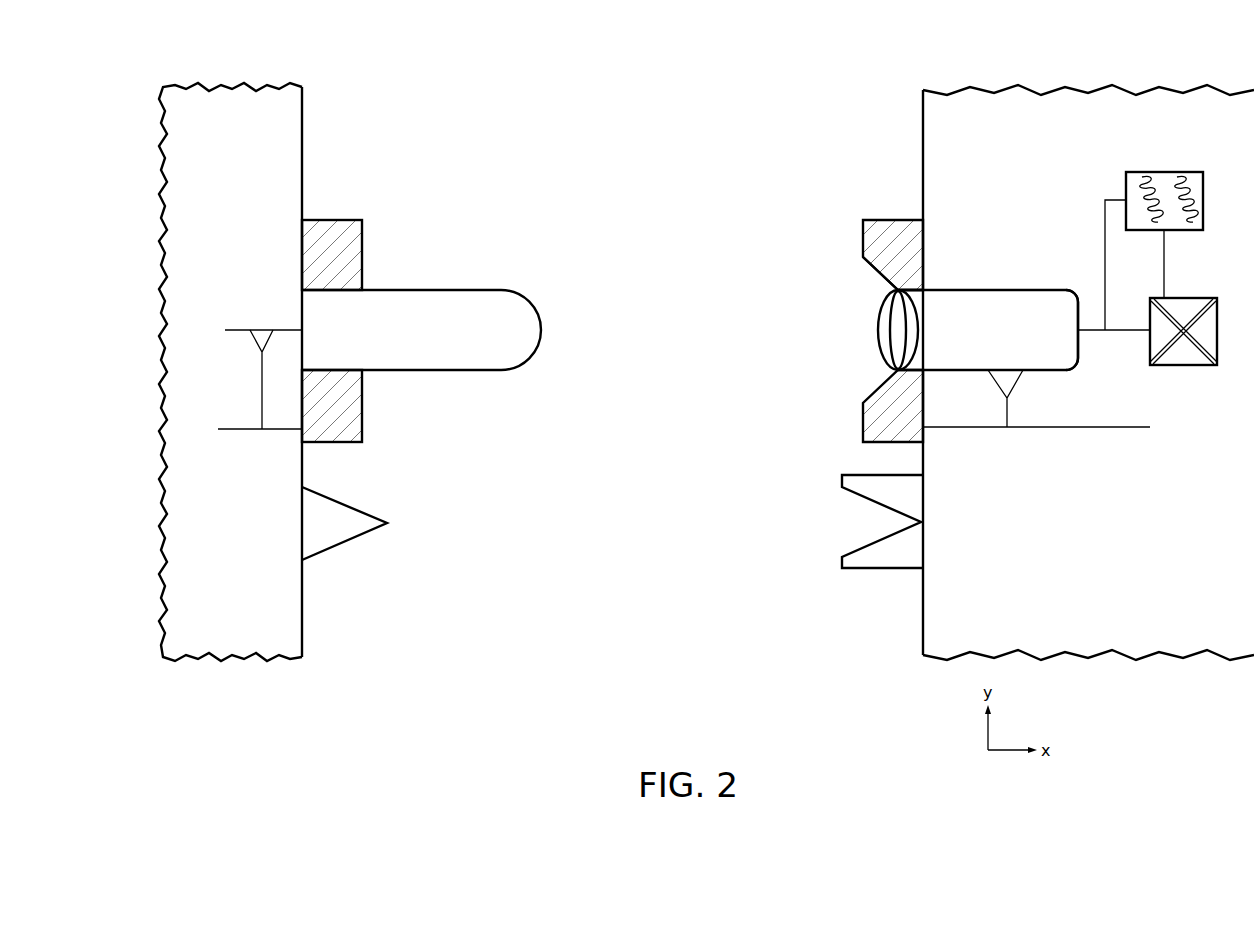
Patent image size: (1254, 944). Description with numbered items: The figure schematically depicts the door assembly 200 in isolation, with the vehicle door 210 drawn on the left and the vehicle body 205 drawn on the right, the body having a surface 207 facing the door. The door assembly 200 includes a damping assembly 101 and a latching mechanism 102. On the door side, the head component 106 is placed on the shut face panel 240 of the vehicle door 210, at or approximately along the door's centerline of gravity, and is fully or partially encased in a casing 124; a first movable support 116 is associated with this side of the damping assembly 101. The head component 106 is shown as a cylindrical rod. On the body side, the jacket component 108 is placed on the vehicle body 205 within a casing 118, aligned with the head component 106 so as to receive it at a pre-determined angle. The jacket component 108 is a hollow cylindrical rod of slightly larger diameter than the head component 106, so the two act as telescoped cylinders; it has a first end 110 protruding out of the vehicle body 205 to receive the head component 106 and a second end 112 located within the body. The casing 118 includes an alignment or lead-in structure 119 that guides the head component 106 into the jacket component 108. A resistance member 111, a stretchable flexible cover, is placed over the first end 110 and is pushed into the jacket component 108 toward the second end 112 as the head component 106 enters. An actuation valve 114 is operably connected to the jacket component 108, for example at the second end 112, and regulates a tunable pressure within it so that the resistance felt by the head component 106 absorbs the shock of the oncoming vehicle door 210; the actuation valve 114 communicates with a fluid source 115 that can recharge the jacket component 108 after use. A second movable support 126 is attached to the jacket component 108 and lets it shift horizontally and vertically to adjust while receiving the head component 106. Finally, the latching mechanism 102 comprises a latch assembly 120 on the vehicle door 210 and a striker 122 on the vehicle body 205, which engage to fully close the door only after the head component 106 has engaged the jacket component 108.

The door assembly 200 is at (746, 94).
The vehicle body 205 is at (1040, 106).
The surface of structure 207 is at (923, 152).
The vehicle door 210 is at (244, 108).
The shut face panel 240 is at (302, 155).
The damping assembly 101 is at (484, 200).
The latching mechanism 102 is at (418, 576).
The head component 106 is at (447, 290).
The jacket component 108 is at (1000, 290).
The first end 110 is at (922, 290).
The resistance member 111 is at (892, 333).
The second end 112 is at (1062, 292).
The actuation valve 114 is at (1182, 297).
The fluid source 115 is at (1163, 172).
The first movable support 116 is at (260, 388).
The casing 118 is at (863, 250).
The lead-in structure 119 is at (875, 270).
The latch assembly 120 is at (347, 503).
The striker 122 is at (855, 498).
The casing 124 is at (362, 240).
The second movable support 126 is at (1071, 415).